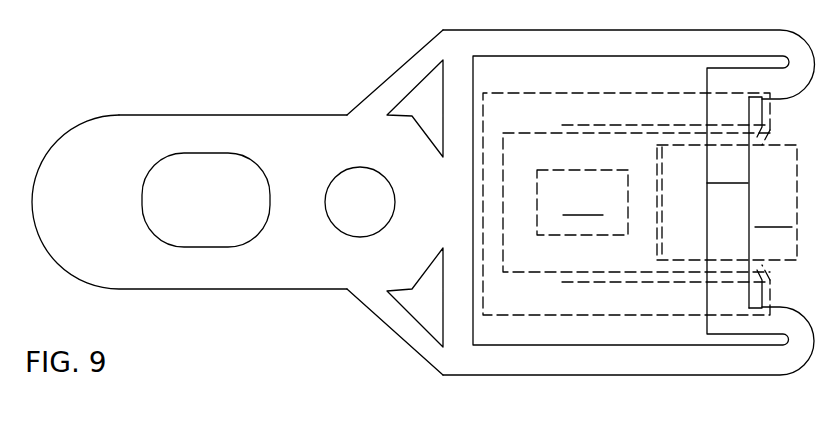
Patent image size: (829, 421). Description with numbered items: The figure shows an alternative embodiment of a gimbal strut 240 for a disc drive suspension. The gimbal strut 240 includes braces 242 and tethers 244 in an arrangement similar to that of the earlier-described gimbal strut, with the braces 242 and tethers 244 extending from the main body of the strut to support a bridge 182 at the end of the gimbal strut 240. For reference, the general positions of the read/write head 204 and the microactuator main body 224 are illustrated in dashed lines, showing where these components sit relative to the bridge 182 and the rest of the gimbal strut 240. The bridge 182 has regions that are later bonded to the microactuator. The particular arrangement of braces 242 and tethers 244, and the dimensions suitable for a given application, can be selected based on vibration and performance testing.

The gimbal strut 240 is at (125, 114).
The braces 242 is at (408, 80).
The tethers 244 is at (458, 118).
The bridge 182 is at (728, 202).
The read/write head 204 is at (727, 202).
The microactuator main body 224 is at (582, 202).